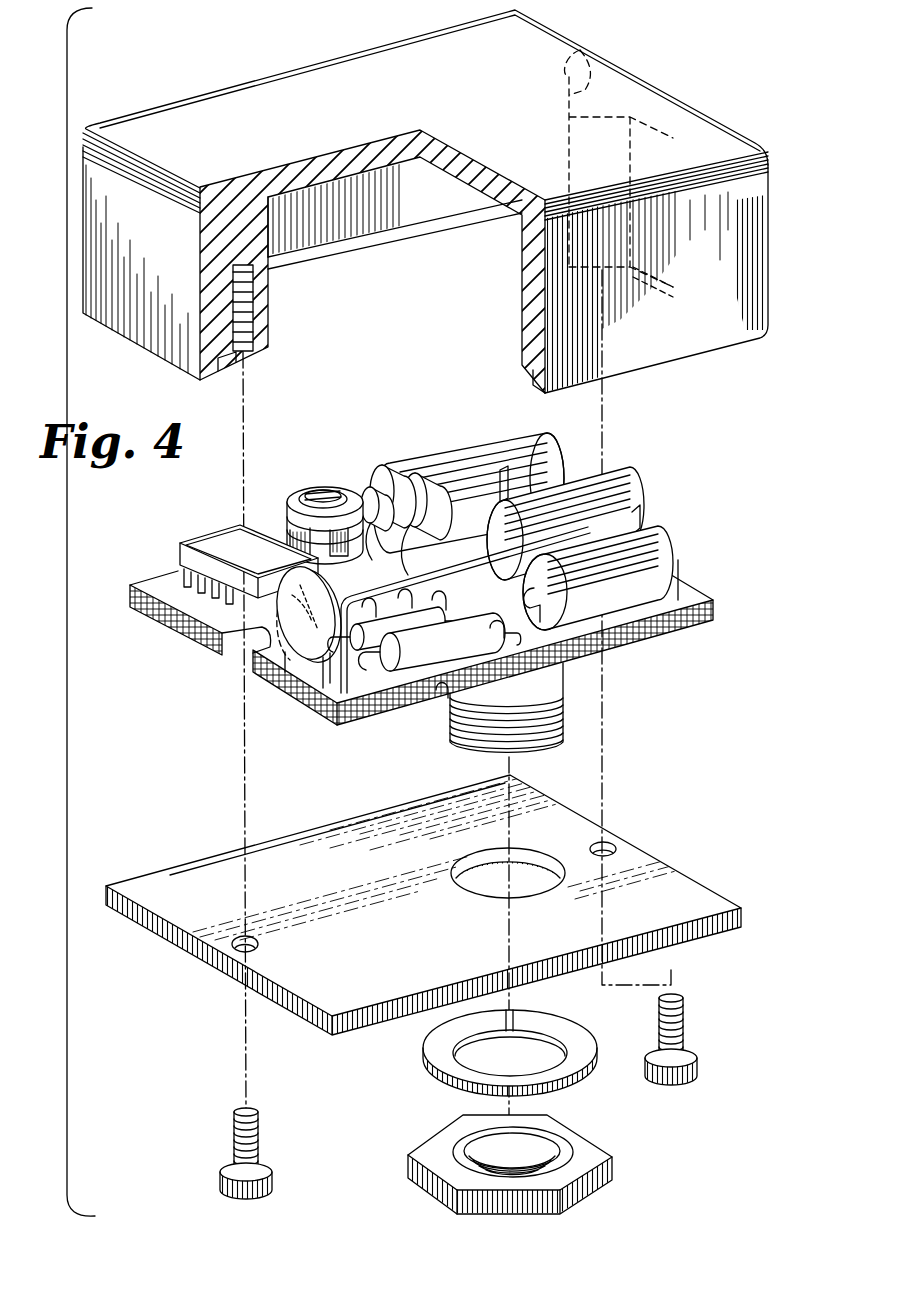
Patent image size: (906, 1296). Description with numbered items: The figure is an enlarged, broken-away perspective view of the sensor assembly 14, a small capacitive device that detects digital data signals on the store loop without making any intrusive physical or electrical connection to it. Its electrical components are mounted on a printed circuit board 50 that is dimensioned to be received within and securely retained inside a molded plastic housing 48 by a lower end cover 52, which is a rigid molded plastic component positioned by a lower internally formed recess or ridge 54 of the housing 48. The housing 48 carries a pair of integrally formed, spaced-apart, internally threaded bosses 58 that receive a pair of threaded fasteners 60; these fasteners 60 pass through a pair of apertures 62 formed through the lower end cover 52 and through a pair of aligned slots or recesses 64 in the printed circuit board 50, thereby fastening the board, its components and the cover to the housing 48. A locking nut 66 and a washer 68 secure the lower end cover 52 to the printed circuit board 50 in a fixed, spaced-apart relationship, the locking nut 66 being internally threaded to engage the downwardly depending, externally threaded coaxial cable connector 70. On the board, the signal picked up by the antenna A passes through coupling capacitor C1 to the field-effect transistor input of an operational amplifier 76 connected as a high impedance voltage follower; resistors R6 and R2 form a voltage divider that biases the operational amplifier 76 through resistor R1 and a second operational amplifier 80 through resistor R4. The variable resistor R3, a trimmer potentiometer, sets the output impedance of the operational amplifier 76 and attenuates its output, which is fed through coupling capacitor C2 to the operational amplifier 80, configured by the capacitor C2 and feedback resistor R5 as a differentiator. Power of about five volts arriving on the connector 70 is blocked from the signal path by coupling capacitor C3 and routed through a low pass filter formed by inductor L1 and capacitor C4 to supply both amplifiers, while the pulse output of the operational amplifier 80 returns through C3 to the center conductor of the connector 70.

The sensor assembly 14 is at (696, 753).
The molded plastic housing 48 is at (425, 214).
The printed circuit board 50 is at (663, 630).
The lower end cover 52 is at (689, 936).
The recess or ridge 54 is at (410, 222).
The internally threaded bosses 58 is at (587, 50).
The threaded fasteners 60 is at (235, 1137).
The apertures 62 is at (236, 949).
The slots or recesses 64 is at (233, 656).
The locking nut 66 is at (590, 1181).
The washer 68 is at (436, 1082).
The coaxial cable connector 70 is at (533, 742).
The operational amplifier 76 is at (238, 555).
The second operational amplifier 80 is at (228, 541).
The antenna A is at (566, 545).
The coupling capacitor C1 is at (297, 657).
The coupling capacitor C2 is at (307, 670).
The coupling capacitor C3 is at (517, 437).
The capacitor C4 is at (657, 543).
The resistor R1 is at (397, 667).
The resistor R2 is at (378, 670).
The variable resistor R3 is at (363, 497).
The resistor R4 is at (385, 470).
The feedback resistor R5 is at (297, 533).
The resistor R6 is at (450, 473).
The inductor L1 is at (438, 700).